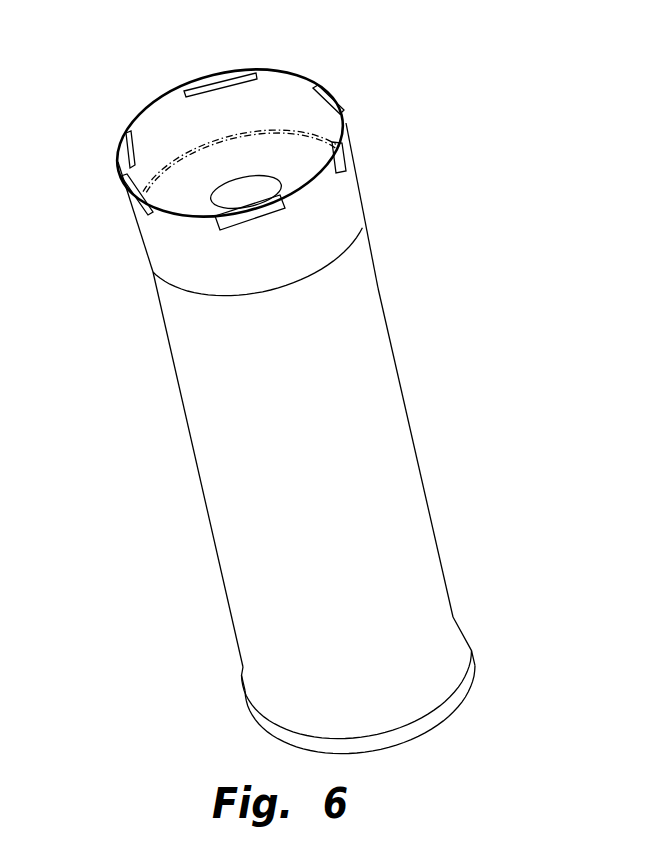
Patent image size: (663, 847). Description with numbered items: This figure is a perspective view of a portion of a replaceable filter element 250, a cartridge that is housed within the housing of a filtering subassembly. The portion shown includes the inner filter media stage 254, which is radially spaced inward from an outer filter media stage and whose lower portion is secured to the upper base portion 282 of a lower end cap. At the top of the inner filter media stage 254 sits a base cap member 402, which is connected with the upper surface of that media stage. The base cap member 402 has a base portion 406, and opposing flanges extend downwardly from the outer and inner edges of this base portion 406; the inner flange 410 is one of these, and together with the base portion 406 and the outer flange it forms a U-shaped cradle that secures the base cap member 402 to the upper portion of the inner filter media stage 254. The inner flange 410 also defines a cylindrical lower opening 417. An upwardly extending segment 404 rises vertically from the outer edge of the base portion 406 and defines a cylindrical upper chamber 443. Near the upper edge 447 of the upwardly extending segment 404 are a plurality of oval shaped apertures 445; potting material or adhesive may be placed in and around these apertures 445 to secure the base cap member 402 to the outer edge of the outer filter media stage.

The filter element 250 is at (313, 389).
The inner filter media stage 254 is at (357, 488).
The upper base portion 282 is at (473, 650).
The base cap member 402 is at (255, 160).
The upwardly extending segment 404 is at (153, 128).
The base portion 406 is at (296, 157).
The inner flange 410 is at (233, 196).
The cylindrical lower opening 417 is at (257, 193).
The cylindrical upper chamber 443 is at (216, 113).
The oval shaped apertures 445 is at (184, 89).
The upper edge 447 is at (150, 218).